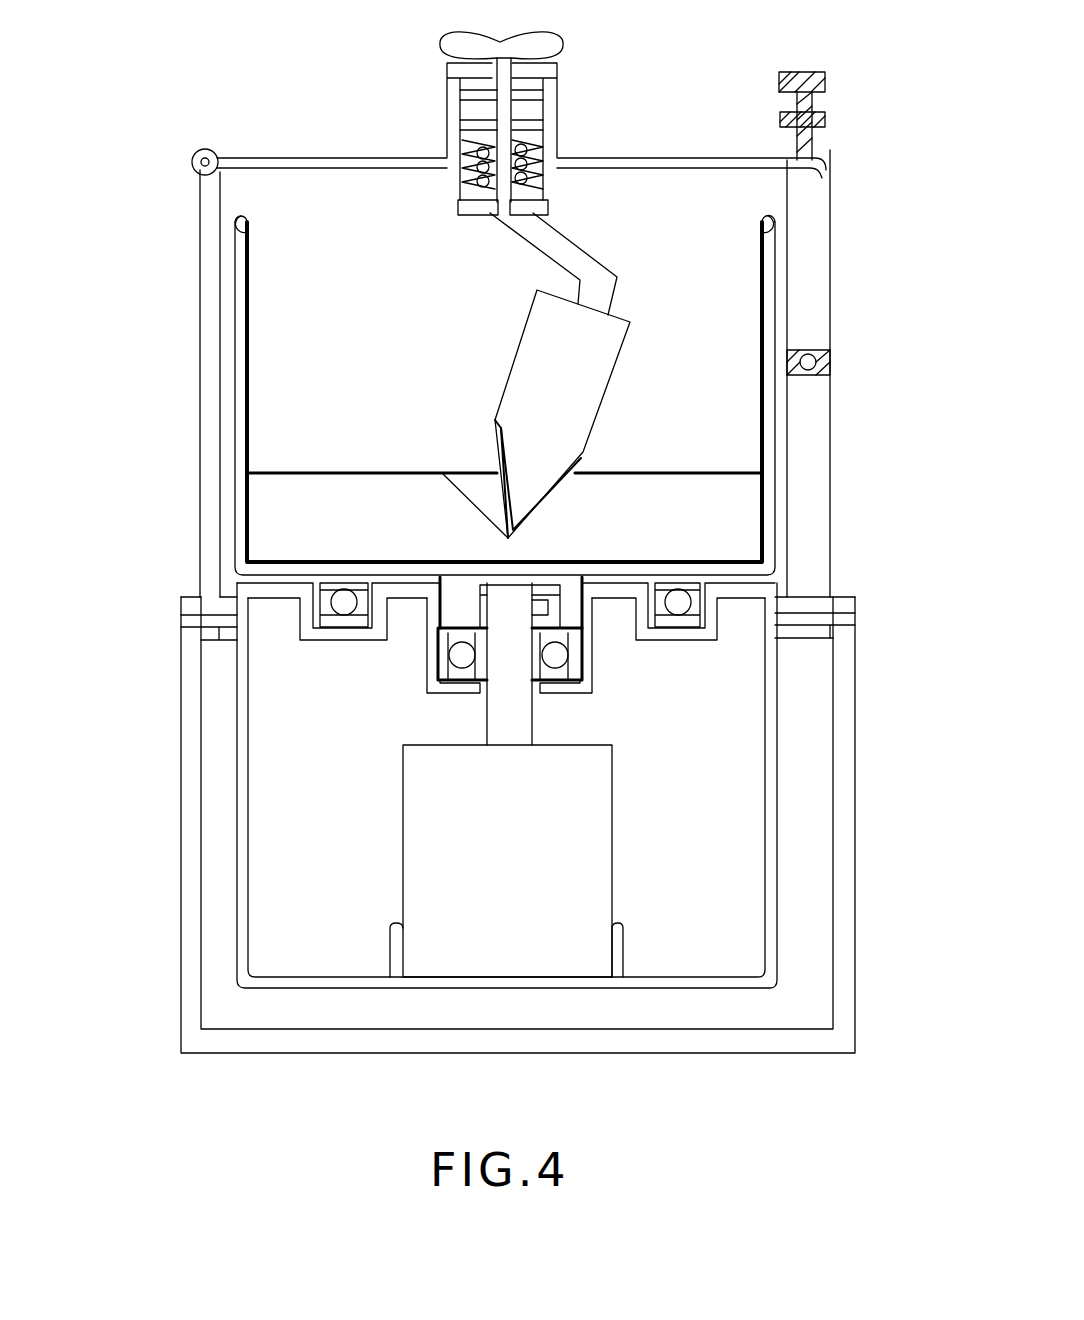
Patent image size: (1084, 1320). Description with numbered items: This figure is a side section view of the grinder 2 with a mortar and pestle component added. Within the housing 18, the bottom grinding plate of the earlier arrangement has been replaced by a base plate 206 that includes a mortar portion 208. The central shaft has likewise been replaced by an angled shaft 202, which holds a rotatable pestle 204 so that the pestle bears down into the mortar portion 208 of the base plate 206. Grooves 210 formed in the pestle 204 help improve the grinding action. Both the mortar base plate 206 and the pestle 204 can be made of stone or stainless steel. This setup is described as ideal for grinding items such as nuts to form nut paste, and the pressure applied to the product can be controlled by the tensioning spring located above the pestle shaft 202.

The processing apparatus 2 is at (850, 505).
The vessel 18 is at (247, 368).
The angled shaft 202 is at (545, 245).
The rotatable pestle 204 is at (570, 390).
The base plate 206 is at (710, 525).
The mortar portion 208 is at (460, 497).
The grooves 210 is at (497, 450).